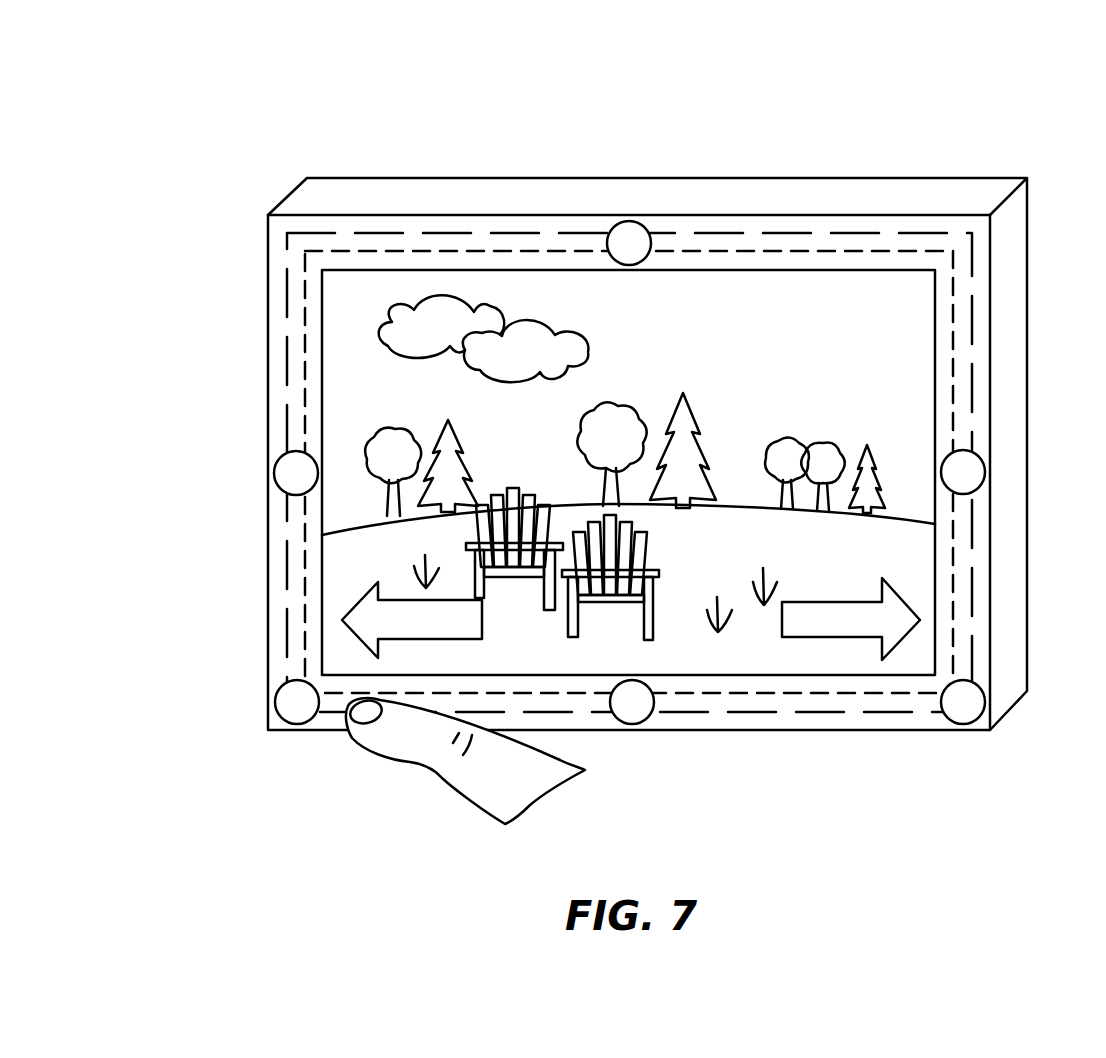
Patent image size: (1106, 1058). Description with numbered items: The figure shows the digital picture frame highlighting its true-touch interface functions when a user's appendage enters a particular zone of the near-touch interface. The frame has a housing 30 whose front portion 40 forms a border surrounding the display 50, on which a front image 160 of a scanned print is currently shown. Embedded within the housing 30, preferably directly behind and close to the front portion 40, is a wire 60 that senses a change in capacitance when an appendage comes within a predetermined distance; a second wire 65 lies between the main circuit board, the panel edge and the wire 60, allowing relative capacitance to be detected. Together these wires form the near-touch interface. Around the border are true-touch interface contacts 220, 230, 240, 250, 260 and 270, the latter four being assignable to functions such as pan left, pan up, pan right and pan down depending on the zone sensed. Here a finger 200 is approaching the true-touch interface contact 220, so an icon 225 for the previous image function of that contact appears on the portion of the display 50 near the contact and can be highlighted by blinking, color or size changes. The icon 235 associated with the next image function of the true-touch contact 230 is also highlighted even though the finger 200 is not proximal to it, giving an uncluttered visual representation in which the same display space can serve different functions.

The housing 30 is at (897, 158).
The front portion 40 is at (275, 533).
The display 50 is at (927, 337).
The wire 60 is at (303, 352).
The second wire 65 is at (287, 405).
The front image 160 is at (737, 558).
The finger 200 is at (423, 759).
The true-touch interface contact 220 is at (287, 700).
The icon 225 is at (345, 620).
The true-touch interface contact 230 is at (973, 698).
The icon 235 is at (905, 622).
The true-touch interface contact 240 is at (287, 475).
The true-touch interface contact 250 is at (629, 228).
The true-touch interface contact 260 is at (973, 472).
The true-touch interface contact 270 is at (632, 710).